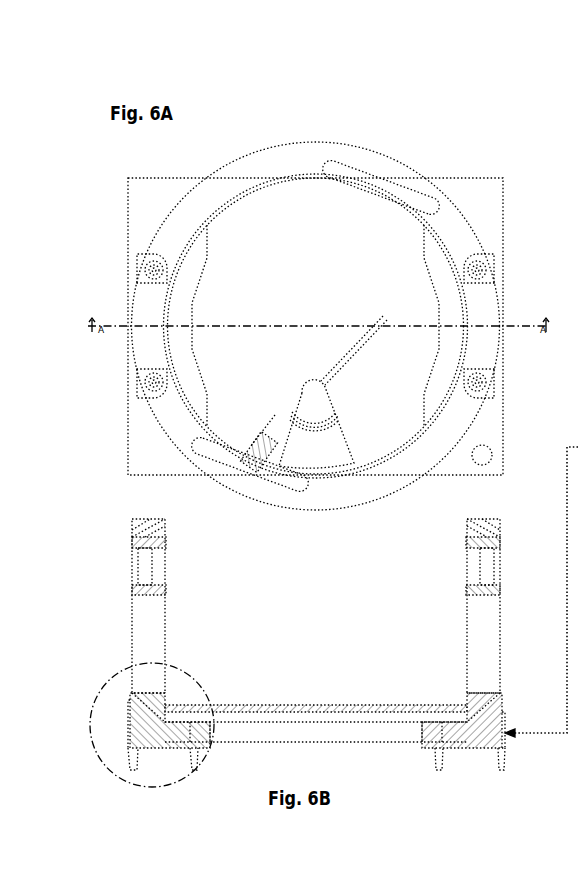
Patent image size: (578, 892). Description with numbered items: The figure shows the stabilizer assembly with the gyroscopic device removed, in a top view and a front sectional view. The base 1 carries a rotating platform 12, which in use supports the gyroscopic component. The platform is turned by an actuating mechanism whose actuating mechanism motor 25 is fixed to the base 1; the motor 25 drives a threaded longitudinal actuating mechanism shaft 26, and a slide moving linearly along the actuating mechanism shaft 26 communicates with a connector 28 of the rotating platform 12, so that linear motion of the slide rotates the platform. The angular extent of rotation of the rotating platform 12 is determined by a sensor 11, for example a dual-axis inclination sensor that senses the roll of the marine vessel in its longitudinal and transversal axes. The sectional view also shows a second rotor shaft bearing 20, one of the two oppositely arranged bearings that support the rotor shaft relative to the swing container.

In FIG. 6B, the base 1 is at (448, 731).
In FIG. 6A, the sensor 11 is at (487, 447).
In FIG. 6B, the rotating platform 12 is at (258, 712).
In FIG. 6B, the second rotor shaft bearing 20 is at (142, 563).
In FIG. 6A, the actuating mechanism motor 25 is at (268, 442).
In FIG. 6A, the actuating mechanism shaft 26 is at (357, 348).
In FIG. 6A, the connector 28 is at (326, 447).